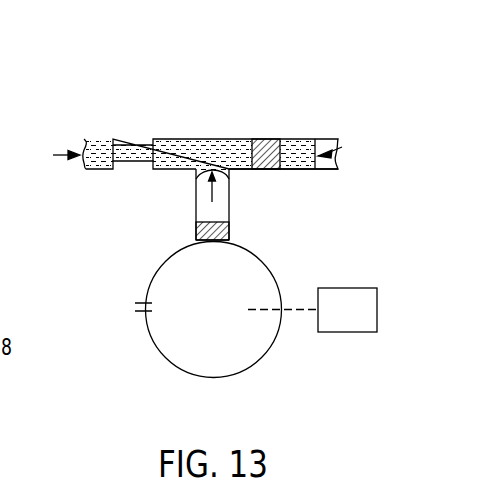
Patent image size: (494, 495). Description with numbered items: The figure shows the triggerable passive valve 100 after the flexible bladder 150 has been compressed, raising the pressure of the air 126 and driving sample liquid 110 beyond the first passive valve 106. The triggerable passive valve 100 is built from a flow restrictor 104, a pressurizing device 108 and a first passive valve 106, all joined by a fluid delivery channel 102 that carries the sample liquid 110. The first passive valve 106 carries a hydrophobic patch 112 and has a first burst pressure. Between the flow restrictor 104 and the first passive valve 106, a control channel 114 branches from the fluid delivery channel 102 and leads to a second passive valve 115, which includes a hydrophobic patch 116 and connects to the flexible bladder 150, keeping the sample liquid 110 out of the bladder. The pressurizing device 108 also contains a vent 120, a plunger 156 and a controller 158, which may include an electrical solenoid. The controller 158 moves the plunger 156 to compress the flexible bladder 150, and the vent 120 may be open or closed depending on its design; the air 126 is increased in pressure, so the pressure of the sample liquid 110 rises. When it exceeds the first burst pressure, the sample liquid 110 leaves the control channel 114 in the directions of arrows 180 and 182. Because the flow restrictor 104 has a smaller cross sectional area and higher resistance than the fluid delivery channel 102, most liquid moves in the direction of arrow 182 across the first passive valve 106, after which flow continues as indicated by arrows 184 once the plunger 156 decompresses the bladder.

The triggerable passive valve 100 is at (312, 102).
The fluid delivery channel 102 is at (167, 137).
The flow restrictor 104 is at (133, 162).
The first passive valve 106 is at (265, 174).
The pressurizing device 108 is at (138, 268).
The sample liquid 110 is at (207, 168).
The hydrophobic patch 112 is at (278, 140).
The control channel 114 is at (231, 188).
The second passive valve 115 is at (195, 233).
The hydrophobic patch 116 is at (232, 231).
The vent 120 is at (140, 308).
The air 126 is at (223, 347).
The flexible bladder 150 is at (157, 362).
The plunger 156 is at (293, 308).
The controller 158 is at (363, 310).
The arrow 180 is at (68, 148).
The arrow 182 is at (342, 147).
The arrows 184 is at (213, 190).